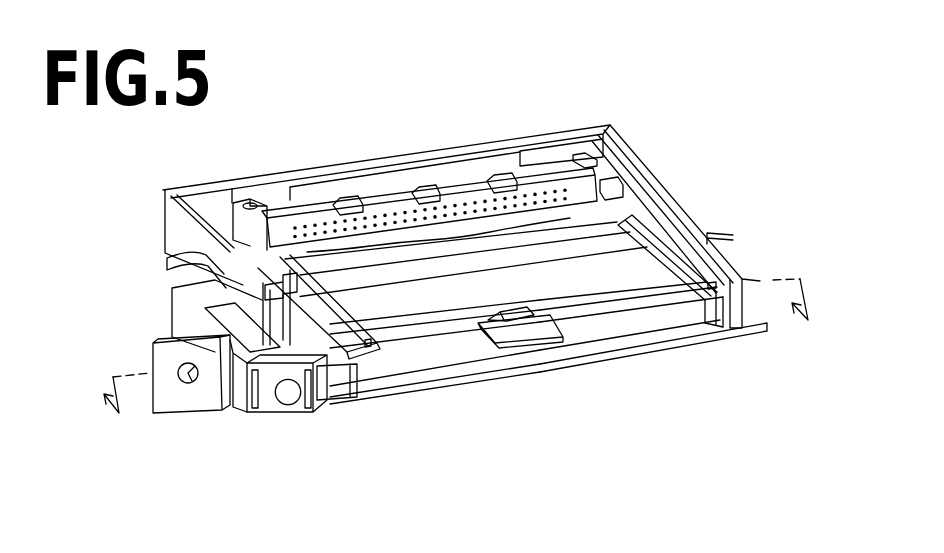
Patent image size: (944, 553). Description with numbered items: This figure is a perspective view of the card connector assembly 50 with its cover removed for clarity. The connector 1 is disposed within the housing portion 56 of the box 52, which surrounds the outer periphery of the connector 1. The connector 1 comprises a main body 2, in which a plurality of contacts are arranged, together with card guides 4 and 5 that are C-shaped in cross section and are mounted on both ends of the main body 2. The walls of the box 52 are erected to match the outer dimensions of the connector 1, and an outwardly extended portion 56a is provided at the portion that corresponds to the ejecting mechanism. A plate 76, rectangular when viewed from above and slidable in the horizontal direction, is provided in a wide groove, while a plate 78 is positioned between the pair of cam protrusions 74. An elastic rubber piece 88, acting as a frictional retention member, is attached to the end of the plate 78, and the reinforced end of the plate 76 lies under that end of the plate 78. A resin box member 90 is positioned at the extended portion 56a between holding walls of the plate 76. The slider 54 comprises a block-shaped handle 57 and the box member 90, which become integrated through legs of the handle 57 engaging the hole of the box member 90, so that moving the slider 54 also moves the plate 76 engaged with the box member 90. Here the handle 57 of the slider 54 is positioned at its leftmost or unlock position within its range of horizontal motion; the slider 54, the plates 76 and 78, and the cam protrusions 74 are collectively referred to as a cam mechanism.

The assembly 50 is at (577, 72).
The housing portion 56 is at (470, 152).
The box 52 is at (405, 152).
The main body 2 is at (320, 205).
The connector 1 is at (614, 178).
The card guide 5 is at (678, 240).
The plate 78 is at (647, 318).
The plate 76 is at (453, 355).
The elastic rubber piece 88 is at (537, 330).
The cam protrusion 74 is at (498, 313).
The card guide 4 is at (340, 312).
The extended portion 56a is at (223, 295).
The box member 90 is at (228, 320).
The handle 57 is at (257, 400).
The slider 54 is at (280, 419).